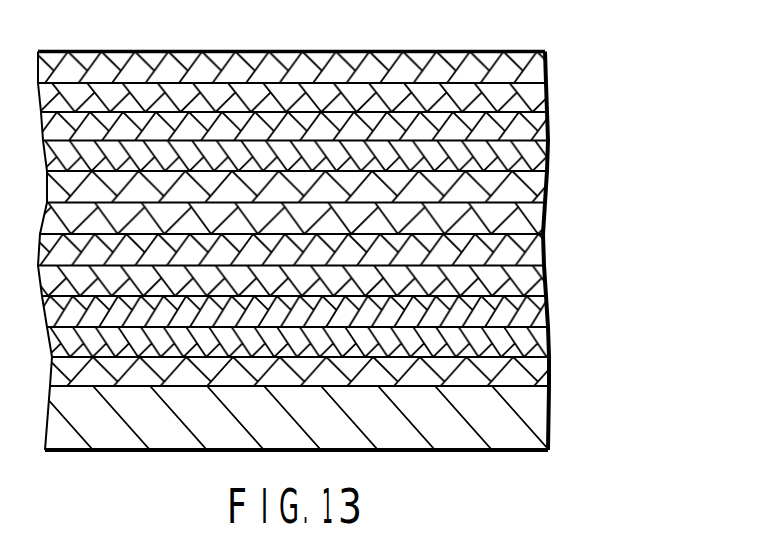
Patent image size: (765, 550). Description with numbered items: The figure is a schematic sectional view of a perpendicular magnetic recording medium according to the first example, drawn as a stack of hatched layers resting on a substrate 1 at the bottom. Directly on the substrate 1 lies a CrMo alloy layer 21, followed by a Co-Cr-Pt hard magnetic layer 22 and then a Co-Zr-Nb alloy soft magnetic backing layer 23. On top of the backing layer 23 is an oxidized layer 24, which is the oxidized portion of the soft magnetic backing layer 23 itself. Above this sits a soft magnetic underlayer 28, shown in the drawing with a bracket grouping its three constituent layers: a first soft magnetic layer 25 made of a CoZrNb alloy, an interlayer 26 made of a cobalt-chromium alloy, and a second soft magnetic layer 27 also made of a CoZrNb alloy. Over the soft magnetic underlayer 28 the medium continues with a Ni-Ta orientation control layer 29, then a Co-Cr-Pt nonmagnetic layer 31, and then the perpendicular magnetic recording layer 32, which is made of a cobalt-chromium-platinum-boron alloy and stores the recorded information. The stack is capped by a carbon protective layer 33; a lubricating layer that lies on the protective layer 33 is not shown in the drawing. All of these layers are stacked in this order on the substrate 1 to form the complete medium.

The substrate 1 is at (530, 434).
The CrMo alloy layer 21 is at (530, 381).
The hard magnetic layer 22 is at (549, 346).
The soft magnetic backing layer 23 is at (548, 315).
The oxidized layer 24 is at (546, 284).
The first soft magnetic layer 25 is at (316, 250).
The interlayer 26 is at (545, 223).
The second soft magnetic layer 27 is at (528, 197).
The soft magnetic underlayer 28 is at (342, 218).
The orientation control layer 29 is at (548, 162).
The nonmagnetic layer 31 is at (549, 132).
The perpendicular magnetic recording layer 32 is at (548, 101).
The protective layer 33 is at (547, 71).